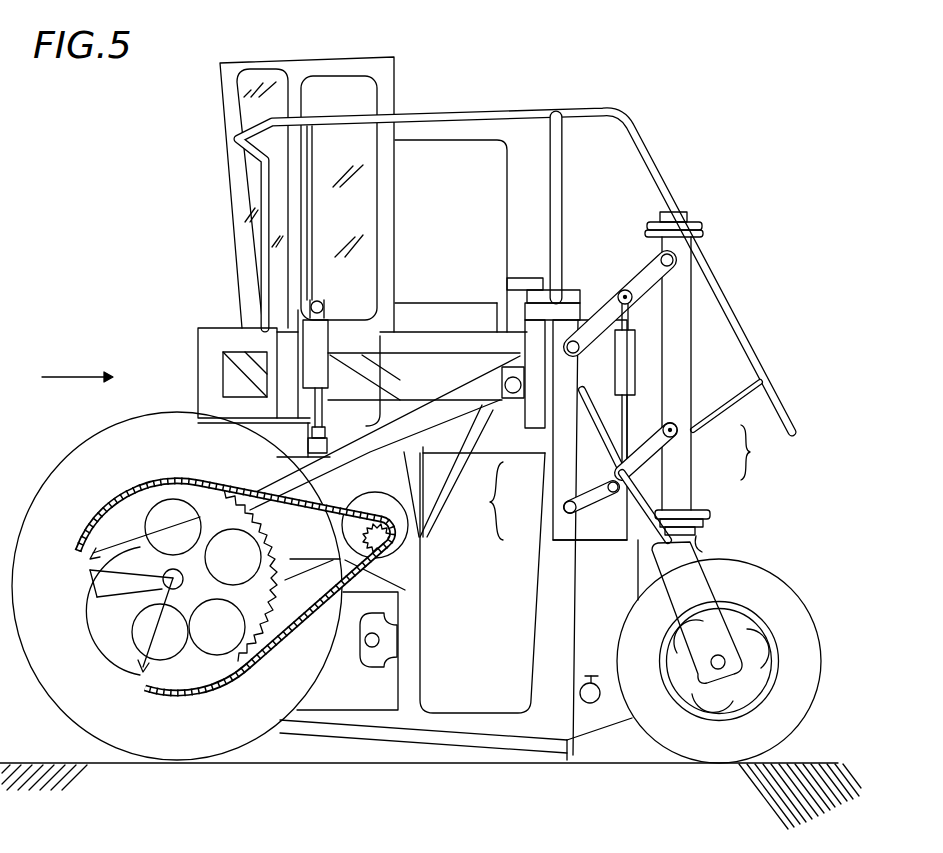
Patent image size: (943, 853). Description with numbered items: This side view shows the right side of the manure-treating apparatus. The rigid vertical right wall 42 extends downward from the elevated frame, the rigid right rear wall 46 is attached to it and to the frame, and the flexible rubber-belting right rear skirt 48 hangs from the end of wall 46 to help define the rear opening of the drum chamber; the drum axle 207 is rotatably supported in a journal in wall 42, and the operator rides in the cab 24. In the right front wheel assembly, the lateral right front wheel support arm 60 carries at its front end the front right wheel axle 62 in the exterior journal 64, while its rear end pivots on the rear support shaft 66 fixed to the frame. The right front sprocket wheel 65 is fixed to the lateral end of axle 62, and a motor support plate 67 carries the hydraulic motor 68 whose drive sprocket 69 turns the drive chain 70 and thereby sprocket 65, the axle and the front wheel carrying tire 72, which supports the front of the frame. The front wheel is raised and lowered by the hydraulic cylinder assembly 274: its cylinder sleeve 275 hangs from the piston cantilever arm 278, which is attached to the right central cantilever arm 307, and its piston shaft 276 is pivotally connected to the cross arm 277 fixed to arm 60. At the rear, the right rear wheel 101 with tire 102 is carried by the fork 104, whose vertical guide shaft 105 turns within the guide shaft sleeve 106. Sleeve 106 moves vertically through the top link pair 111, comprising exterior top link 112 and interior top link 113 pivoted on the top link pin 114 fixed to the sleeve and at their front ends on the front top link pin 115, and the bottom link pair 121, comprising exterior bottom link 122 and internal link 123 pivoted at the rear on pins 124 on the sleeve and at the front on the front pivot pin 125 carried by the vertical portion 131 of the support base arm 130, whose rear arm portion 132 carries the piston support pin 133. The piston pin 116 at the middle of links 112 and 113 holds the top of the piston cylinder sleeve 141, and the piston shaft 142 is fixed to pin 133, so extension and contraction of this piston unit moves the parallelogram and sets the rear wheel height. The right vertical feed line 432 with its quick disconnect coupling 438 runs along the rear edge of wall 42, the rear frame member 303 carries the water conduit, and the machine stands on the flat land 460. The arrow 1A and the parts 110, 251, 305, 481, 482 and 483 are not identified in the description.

The direction of view 1A is at (64, 378).
The cab 24 is at (392, 71).
The rigid vertical right wall 42 is at (375, 690).
The rigid right rear wall 46 is at (560, 712).
The flexible right rear skirt 48 is at (605, 630).
The right front wheel support arm 60 is at (383, 465).
The front right wheel axle 62 is at (164, 584).
The exterior right front wheel journal 64 is at (115, 640).
The right front sprocket wheel 65 is at (214, 668).
The rear support shaft 66 is at (516, 396).
The motor support plate 67 is at (400, 562).
The hydraulic motor 68 is at (400, 540).
The right wheel motor drive sprocket 69 is at (383, 585).
The drive chain 70 is at (318, 610).
The right front wheel tire 72 is at (51, 580).
The right rear wheel 101 is at (758, 658).
The right rear tire 102 is at (812, 670).
The fork 104 is at (697, 590).
The vertical guide shaft 105 is at (702, 537).
The right guide shaft sleeve 106 is at (692, 247).
The upper steering bearing 110 is at (688, 217).
The top right rear wheel link pair 111 is at (568, 266).
The exterior top link 112 is at (640, 289).
The interior top link 113 is at (612, 310).
The top right rear link pin 114 is at (670, 252).
The front top link pin 115 is at (547, 287).
The right top piston pin 116 is at (637, 304).
The bottom right rear wheel link pair 121 is at (757, 452).
The exterior bottom right link 122 is at (684, 445).
The right bottom internal link 123 is at (630, 470).
The rigid pin 124 is at (677, 423).
The front pivot pin 125 is at (548, 548).
The right rear wheel support base arm 130 is at (481, 501).
The forward vertical portion 131 is at (556, 452).
The rear arm portion 132 is at (560, 528).
The right rear wheel vertical piston support pin 133 is at (628, 477).
The vertical piston cylinder sleeve 141 is at (618, 362).
The piston shaft 142 is at (627, 430).
The axle 207 is at (380, 645).
The panel 251 is at (434, 225).
The front right hydraulic cylinder assembly 274 is at (370, 386).
The right piston cylinder sleeve 275 is at (323, 343).
The piston shaft 276 is at (319, 410).
The cross arm 277 is at (290, 458).
The piston cantilever arm 278 is at (322, 300).
The rear frame member 303 is at (238, 328).
The right central cantilever arm 307 is at (276, 342).
The mount 305 is at (522, 330).
The right vertical feed line 432 is at (573, 592).
The right quick disconnect coupling 438 is at (596, 683).
The site of flat land 460 is at (627, 750).
The bracket 481 is at (640, 543).
The frame rail 482 is at (430, 330).
The handlebar 483 is at (638, 130).